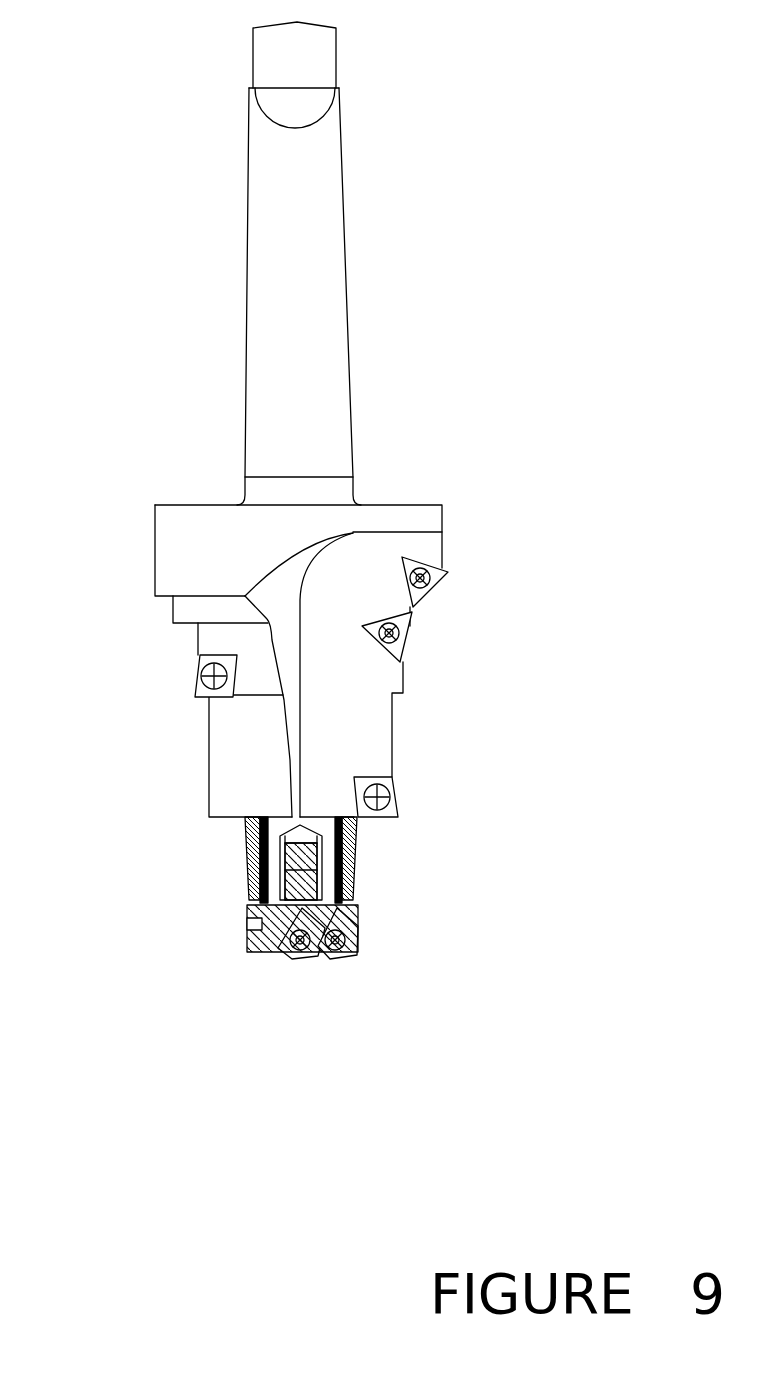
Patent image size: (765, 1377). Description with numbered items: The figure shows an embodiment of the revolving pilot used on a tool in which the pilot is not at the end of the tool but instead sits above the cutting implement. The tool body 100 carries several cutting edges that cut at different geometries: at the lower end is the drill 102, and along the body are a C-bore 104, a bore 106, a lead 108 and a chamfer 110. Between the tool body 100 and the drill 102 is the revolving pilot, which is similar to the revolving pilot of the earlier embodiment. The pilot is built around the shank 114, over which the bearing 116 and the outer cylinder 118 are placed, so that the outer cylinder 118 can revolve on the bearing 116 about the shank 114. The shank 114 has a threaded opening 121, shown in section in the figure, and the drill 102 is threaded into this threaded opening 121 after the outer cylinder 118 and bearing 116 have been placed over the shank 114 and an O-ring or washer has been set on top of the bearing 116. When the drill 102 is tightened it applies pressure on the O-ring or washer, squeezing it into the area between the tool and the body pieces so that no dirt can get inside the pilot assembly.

The tool body 100 is at (355, 746).
The drill 102 is at (358, 949).
The C-bore 104 is at (398, 810).
The bore 106 is at (193, 677).
The lead 108 is at (408, 634).
The chamfer 110 is at (445, 582).
The shank 114 is at (270, 843).
The bearing 116 is at (265, 880).
The outer cylinder 118 is at (357, 843).
The threaded opening 121 is at (357, 866).